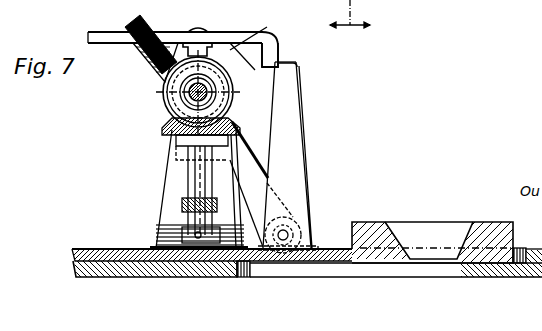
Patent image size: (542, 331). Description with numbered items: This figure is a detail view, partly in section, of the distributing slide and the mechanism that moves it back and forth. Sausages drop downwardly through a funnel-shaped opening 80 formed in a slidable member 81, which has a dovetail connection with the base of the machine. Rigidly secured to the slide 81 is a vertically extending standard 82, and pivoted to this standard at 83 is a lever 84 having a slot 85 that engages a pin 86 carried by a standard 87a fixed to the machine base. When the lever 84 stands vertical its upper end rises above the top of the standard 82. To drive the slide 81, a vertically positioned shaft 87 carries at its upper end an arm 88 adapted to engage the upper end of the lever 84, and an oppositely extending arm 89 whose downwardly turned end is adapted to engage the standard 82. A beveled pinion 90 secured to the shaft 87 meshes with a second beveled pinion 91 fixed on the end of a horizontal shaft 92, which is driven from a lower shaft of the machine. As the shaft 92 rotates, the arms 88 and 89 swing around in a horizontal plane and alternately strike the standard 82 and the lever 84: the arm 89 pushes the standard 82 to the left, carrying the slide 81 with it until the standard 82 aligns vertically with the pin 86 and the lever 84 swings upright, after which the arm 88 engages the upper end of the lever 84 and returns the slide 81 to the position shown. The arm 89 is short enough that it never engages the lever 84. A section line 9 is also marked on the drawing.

The section line 9- 9 is at (350, 21).
The opening 80 is at (456, 232).
The slidable member 81 is at (534, 233).
The standard 82 is at (284, 141).
The pivot 83 is at (288, 232).
The lever 84 is at (222, 178).
The slot 85 is at (250, 145).
The pin 86 is at (163, 108).
The shaft 87 is at (217, 67).
The standard 87a is at (180, 152).
The arm 88 is at (200, 30).
The arm 89 is at (280, 48).
The beveled pinion 90 is at (166, 127).
The second beveled pinion 91 is at (240, 60).
The shaft 92 is at (207, 91).